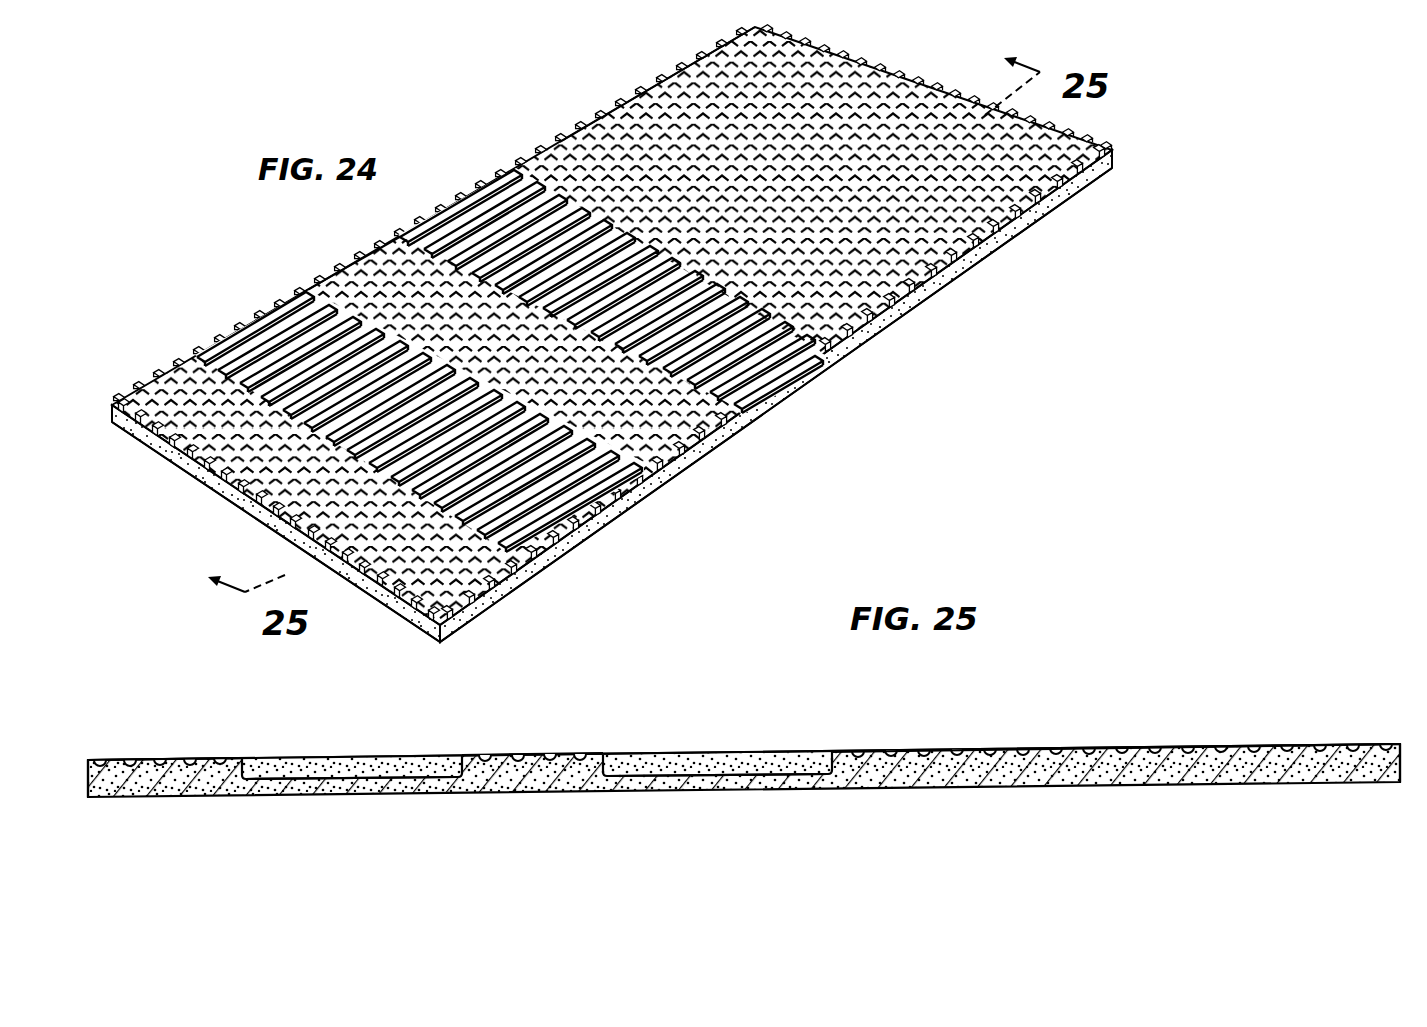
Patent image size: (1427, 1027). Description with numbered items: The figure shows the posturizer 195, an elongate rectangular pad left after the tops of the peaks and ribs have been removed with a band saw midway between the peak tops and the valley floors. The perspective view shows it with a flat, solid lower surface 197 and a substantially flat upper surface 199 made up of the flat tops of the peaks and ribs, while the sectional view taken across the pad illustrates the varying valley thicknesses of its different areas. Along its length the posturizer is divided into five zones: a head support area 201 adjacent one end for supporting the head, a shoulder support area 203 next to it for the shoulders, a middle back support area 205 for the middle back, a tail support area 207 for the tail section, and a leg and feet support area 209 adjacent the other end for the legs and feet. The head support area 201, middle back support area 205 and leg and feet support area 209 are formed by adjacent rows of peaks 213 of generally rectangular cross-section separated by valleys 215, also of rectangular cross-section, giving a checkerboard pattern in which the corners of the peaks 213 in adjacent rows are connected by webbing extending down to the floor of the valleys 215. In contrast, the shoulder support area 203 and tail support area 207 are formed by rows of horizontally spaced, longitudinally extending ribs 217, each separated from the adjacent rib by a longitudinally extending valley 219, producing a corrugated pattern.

In FIG. 24, the posturizer 195 is at (622, 333).
In FIG. 25, the posturizer 195 is at (744, 736).
In FIG. 24, the lower surface 197 is at (930, 316).
In FIG. 25, the lower surface 197 is at (1140, 788).
In FIG. 24, the upper surface 199 is at (862, 88).
In FIG. 25, the upper surface 199 is at (1137, 747).
In FIG. 24, the head support area 201 is at (150, 390).
In FIG. 25, the head support area 201 is at (164, 756).
In FIG. 24, the shoulder support area 203 is at (265, 352).
In FIG. 25, the shoulder support area 203 is at (355, 782).
In FIG. 24, the middle back support area 205 is at (358, 272).
In FIG. 25, the middle back support area 205 is at (553, 778).
In FIG. 24, the tail support area 207 is at (462, 230).
In FIG. 25, the tail support area 207 is at (730, 752).
In FIG. 24, the leg and feet support area 209 is at (622, 124).
In FIG. 25, the leg and feet support area 209 is at (1312, 744).
In FIG. 24, the peaks 213 is at (662, 84).
In FIG. 25, the peaks 213 is at (140, 755).
In FIG. 24, the valleys 215 is at (968, 272).
In FIG. 25, the valleys 215 is at (188, 757).
In FIG. 24, the ribs 217 is at (774, 362).
In FIG. 25, the ribs 217 is at (537, 754).
In FIG. 24, the longitudinally extending valley 219 is at (754, 386).
In FIG. 25, the longitudinally extending valley 219 is at (396, 762).